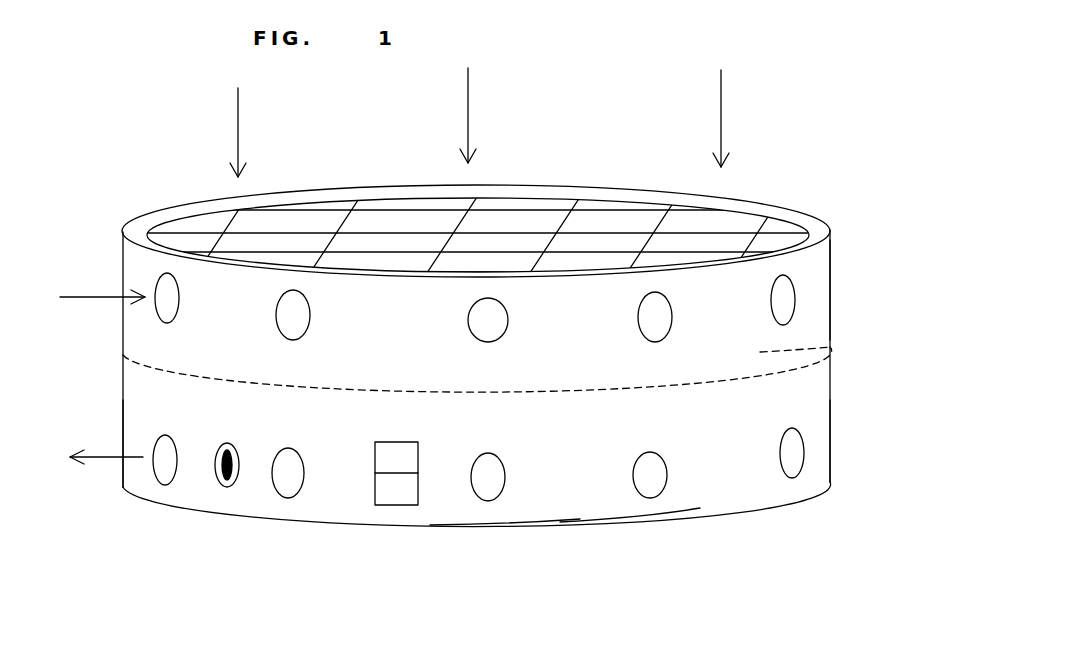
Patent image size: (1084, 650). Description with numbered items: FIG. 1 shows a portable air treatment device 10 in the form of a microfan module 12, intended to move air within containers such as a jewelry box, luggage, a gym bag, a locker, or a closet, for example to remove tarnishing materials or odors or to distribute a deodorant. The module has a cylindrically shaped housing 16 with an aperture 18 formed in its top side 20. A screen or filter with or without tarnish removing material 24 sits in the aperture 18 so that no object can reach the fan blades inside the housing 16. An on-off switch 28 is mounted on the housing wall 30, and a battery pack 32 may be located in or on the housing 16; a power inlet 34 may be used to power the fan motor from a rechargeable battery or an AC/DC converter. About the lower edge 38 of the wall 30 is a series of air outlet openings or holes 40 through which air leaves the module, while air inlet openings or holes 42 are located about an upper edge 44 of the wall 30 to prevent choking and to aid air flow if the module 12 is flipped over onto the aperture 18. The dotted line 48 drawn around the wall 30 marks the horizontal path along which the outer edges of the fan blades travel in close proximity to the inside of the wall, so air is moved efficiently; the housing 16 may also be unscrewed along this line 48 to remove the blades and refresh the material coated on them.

The portable air treatment device 10 is at (148, 188).
The microfan module 12 is at (808, 102).
The housing 16 is at (683, 452).
The aperture 18 is at (522, 248).
The top side 20 is at (832, 233).
The screen or filter with or without tarnish removing material 24 is at (370, 215).
The on-off switch 28 is at (397, 505).
The housing wall 30 is at (562, 363).
The battery pack 32 is at (605, 508).
The power inlet 34 is at (240, 472).
The lower edge 38 is at (560, 508).
The air outlet openings or holes 40 is at (172, 488).
The air inlet openings or holes 42 is at (473, 337).
The upper edge 44 is at (830, 283).
The dotted line 48 is at (805, 358).